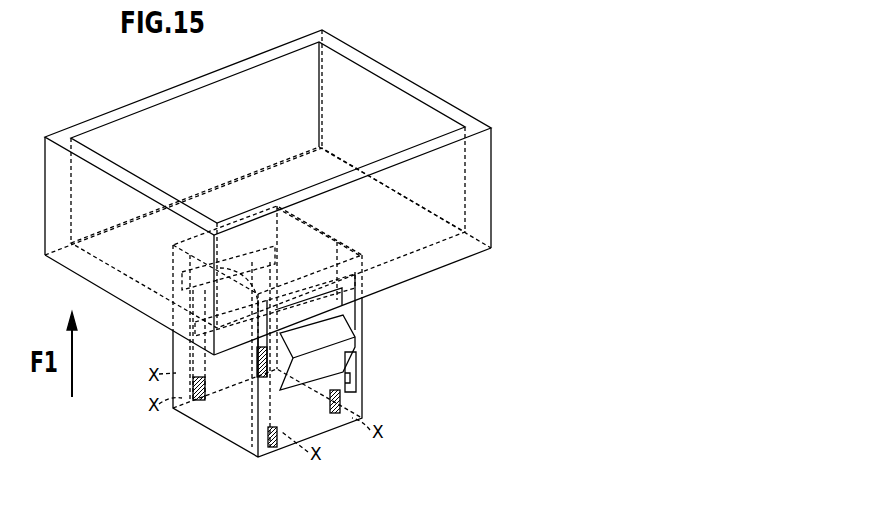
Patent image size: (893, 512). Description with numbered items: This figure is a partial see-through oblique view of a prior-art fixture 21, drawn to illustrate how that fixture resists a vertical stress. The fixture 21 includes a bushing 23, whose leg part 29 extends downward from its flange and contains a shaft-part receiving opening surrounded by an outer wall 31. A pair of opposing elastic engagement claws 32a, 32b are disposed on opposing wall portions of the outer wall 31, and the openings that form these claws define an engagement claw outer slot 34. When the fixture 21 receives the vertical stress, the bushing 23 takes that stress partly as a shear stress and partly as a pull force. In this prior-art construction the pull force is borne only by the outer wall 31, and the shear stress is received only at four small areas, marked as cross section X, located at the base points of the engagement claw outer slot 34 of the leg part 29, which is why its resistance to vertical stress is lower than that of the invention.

The fixture 21 is at (470, 94).
The bushing 23 is at (442, 284).
The leg part 29 is at (365, 407).
The outer wall 31 is at (355, 317).
The elastic engagement claw 32a is at (352, 347).
The elastic engagement claw 32b is at (172, 322).
The engagement claw outer slot 34 is at (352, 374).